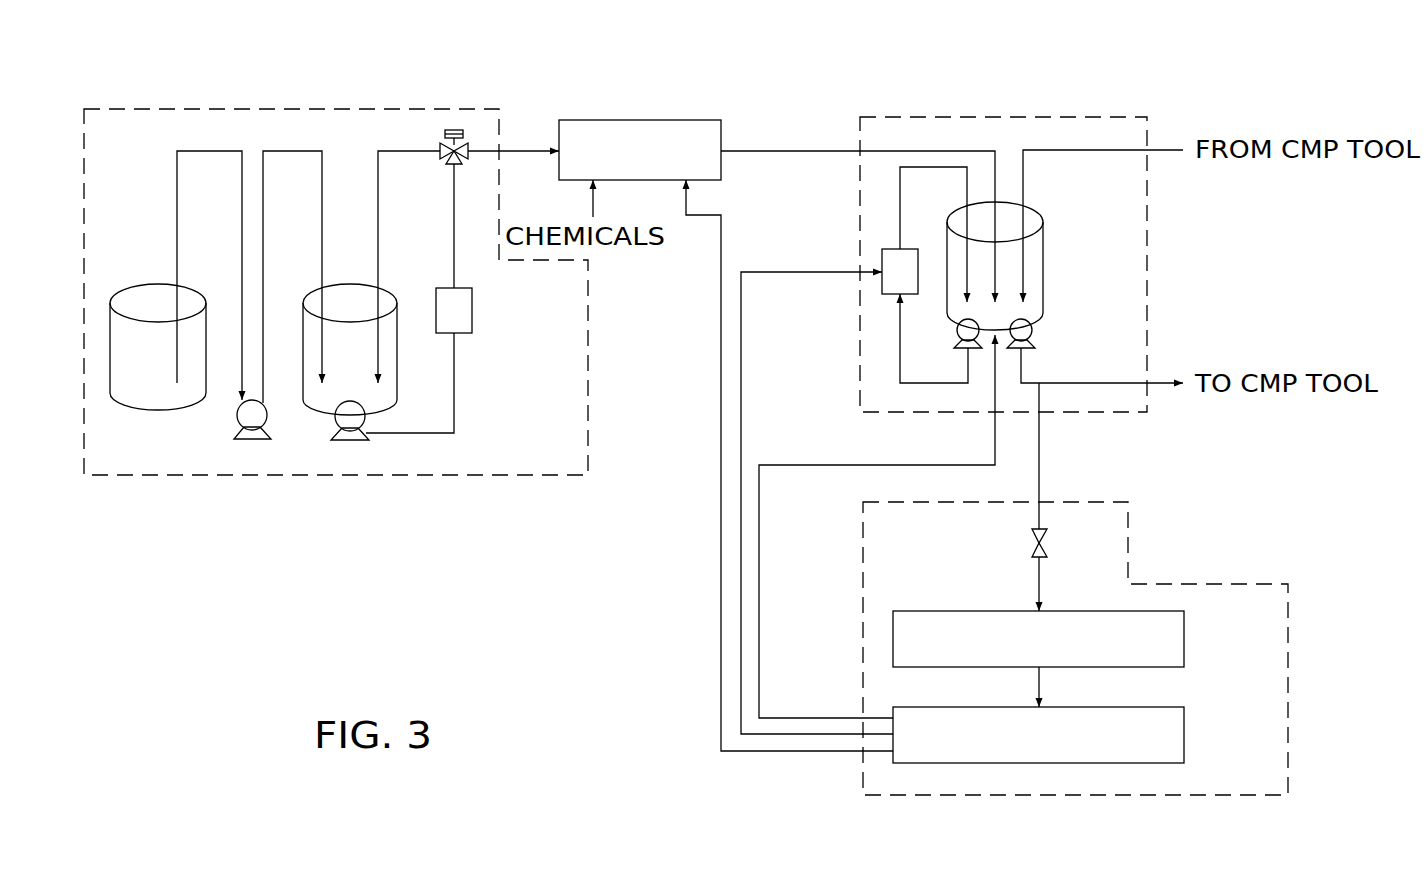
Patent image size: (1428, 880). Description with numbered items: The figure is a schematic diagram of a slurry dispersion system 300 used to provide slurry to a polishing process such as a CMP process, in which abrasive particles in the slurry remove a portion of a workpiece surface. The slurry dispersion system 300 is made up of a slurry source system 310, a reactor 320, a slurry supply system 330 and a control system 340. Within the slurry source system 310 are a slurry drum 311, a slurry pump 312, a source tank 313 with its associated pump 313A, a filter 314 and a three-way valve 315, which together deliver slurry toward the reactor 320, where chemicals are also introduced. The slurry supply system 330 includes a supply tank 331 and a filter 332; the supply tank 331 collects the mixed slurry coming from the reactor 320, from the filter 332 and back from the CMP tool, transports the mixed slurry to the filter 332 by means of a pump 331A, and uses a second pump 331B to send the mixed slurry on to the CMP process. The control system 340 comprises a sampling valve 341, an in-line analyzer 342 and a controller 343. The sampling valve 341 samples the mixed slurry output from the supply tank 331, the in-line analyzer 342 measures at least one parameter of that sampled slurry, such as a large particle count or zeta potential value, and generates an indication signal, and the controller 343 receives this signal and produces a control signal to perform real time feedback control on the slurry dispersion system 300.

The slurry dispersion system 300 is at (1108, 67).
The slurry source system 310 is at (183, 108).
The slurry drum 311 is at (158, 412).
The slurry pump 312 is at (253, 440).
The source tank 313 is at (303, 412).
The pump 313A is at (353, 441).
The filter 314 is at (472, 312).
The three-way valve 315 is at (446, 128).
The reactor 320 is at (638, 119).
The slurry supply system 330 is at (962, 117).
The supply tank 331 is at (1043, 272).
The pump 331A is at (957, 337).
The pump 331B is at (1035, 345).
The filter 332 is at (880, 256).
The control system 340 is at (1288, 690).
The sampling valve 341 is at (1030, 547).
The in-line analyzer 342 is at (1184, 637).
The controller 343 is at (1184, 732).